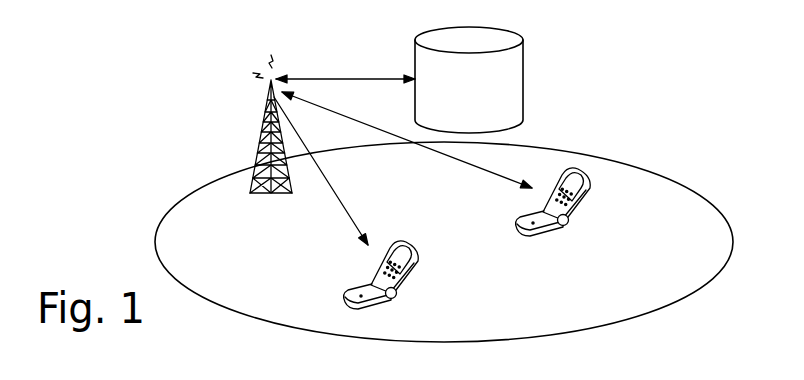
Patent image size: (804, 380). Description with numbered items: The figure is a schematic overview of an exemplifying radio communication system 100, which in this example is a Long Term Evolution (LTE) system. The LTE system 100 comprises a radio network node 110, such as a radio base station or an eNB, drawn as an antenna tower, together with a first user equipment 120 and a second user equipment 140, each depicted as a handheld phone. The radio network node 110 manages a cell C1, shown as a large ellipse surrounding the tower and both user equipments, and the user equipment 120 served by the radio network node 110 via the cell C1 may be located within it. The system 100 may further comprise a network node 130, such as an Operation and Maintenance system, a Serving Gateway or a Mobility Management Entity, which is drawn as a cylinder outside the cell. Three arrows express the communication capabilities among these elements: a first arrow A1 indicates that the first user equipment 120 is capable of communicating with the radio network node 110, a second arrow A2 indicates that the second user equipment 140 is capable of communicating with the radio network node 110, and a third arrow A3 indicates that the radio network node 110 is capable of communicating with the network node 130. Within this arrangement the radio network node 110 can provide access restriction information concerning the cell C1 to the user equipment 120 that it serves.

The radio communication system 100 is at (112, 93).
The radio network node 110 is at (247, 124).
The first user equipment 120 is at (357, 279).
The network node 130 is at (469, 80).
The second user equipment 140 is at (528, 206).
The cell C1 is at (444, 242).
The first arrow A1 is at (321, 171).
The second arrow A2 is at (407, 140).
The third arrow A3 is at (345, 67).